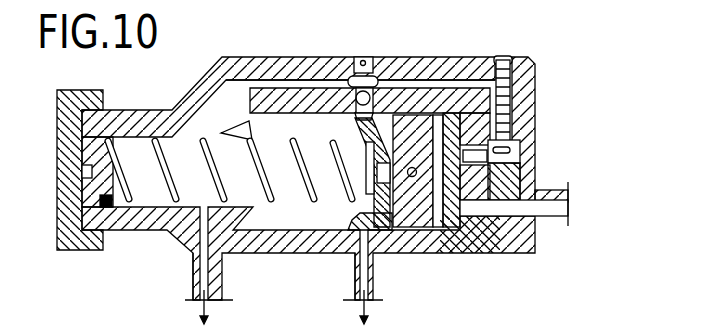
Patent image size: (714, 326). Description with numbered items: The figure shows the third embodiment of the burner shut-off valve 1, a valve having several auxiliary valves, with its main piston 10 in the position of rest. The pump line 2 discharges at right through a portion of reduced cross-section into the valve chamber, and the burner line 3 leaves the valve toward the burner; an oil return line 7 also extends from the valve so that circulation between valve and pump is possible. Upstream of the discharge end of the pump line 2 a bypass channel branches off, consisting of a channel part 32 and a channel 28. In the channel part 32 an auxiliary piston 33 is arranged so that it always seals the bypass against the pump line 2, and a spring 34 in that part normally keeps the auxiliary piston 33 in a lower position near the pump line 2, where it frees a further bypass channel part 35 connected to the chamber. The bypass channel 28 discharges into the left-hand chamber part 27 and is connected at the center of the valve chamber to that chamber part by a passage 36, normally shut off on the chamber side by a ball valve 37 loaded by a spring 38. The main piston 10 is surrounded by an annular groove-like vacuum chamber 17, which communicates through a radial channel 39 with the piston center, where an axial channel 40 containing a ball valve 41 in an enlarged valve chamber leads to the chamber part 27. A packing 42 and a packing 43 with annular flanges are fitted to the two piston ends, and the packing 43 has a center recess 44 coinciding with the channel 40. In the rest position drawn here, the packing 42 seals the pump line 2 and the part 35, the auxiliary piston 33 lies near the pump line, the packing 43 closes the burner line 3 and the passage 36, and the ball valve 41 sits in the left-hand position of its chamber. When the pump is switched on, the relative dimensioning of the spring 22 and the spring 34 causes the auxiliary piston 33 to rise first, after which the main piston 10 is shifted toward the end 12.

The burner shut-off valve 1 is at (97, 262).
The pump line 2 is at (557, 220).
The burner line 3 is at (374, 292).
The oil return line 7 is at (225, 265).
The main piston 10 is at (354, 137).
The end 12 is at (112, 200).
The vacuum chamber 17 is at (440, 230).
The spring 22 is at (163, 135).
The left-hand chamber part 27 is at (270, 133).
The bypass channel 28 is at (428, 82).
The bypass channel part 32 is at (541, 167).
The auxiliary piston 33 is at (543, 147).
The spring 34 is at (511, 92).
The bypass channel part 35 is at (514, 113).
The passage 36 is at (363, 115).
The ball valve 37 is at (369, 97).
The spring 38 is at (361, 76).
The radial channel 39 is at (450, 112).
The axial channel 40 is at (410, 178).
The ball valve 41 is at (415, 178).
The packing 42 is at (477, 230).
The packing 43 is at (344, 228).
The center recess 44 is at (378, 172).